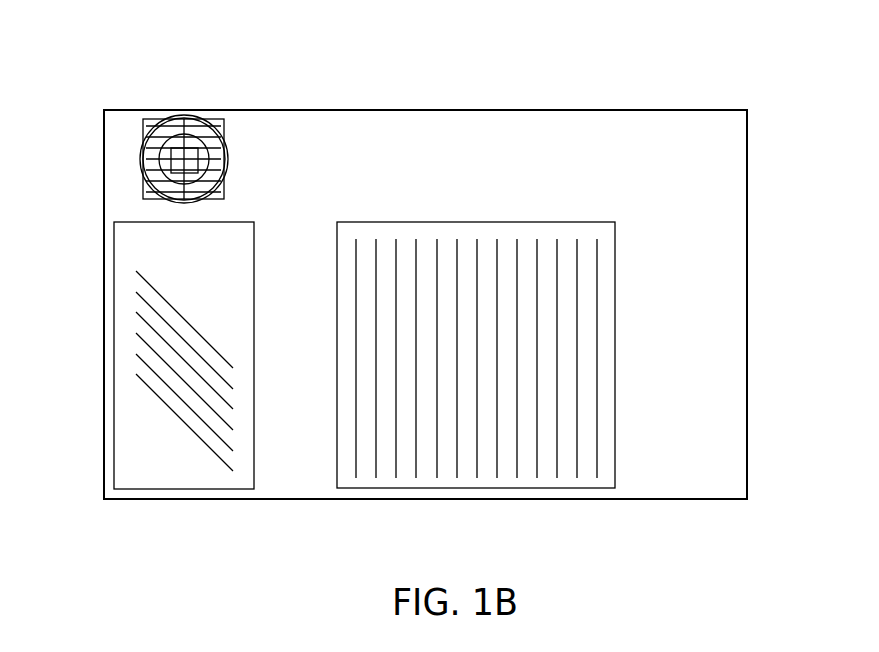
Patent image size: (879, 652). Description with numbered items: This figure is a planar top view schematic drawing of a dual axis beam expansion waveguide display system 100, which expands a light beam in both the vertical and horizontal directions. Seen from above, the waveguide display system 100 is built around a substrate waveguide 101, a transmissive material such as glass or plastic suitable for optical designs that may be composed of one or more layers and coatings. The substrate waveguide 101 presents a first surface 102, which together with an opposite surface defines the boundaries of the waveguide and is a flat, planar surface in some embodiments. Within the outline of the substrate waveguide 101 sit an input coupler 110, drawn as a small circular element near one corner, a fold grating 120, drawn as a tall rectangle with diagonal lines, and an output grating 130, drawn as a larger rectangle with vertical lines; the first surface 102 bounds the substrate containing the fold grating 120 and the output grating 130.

The dual axis beam expansion waveguide display system 100 is at (538, 70).
The substrate waveguide 101 is at (600, 148).
The first surface 102 is at (738, 258).
The input coupler 110 is at (157, 118).
The fold grating 120 is at (127, 335).
The output grating 130 is at (605, 470).